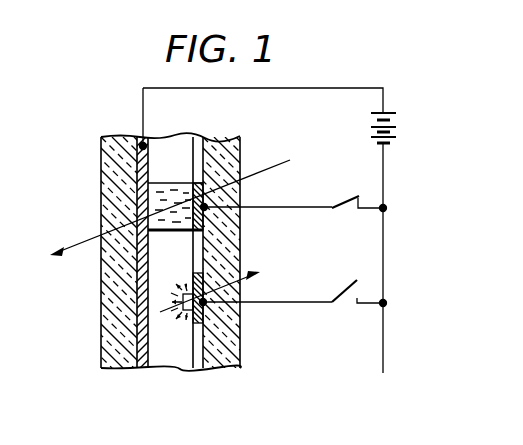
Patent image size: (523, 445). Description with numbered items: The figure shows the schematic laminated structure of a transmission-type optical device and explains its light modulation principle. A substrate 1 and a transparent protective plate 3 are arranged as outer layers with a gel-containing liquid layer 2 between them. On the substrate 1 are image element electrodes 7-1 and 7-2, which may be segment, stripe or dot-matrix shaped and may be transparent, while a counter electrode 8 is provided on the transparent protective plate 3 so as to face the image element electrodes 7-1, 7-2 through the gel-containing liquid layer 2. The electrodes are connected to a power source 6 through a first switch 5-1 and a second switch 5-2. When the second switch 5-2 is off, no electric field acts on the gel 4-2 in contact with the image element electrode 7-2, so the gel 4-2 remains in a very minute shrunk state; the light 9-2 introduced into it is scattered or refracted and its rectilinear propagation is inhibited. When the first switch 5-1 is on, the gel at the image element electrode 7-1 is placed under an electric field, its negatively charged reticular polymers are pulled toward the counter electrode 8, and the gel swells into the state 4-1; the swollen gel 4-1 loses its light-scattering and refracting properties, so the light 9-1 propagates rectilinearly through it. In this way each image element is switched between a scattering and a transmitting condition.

The substrate 1 is at (227, 372).
The gel-containing liquid layer 2 is at (180, 372).
The transparent protective plate 3 is at (123, 372).
The counter electrode 8 is at (145, 372).
The gel in swollen state 4-1 is at (155, 197).
The gel in shrunk state 4-2 is at (180, 305).
The first image element electrode 7-1 is at (205, 196).
The second image element electrode 7-2 is at (205, 317).
The light propagating rectilinearly 9-1 is at (88, 240).
The scattered light 9-2 is at (275, 263).
The power source 6 is at (397, 118).
The first switch 5-1 is at (360, 198).
The second switch 5-2 is at (358, 288).